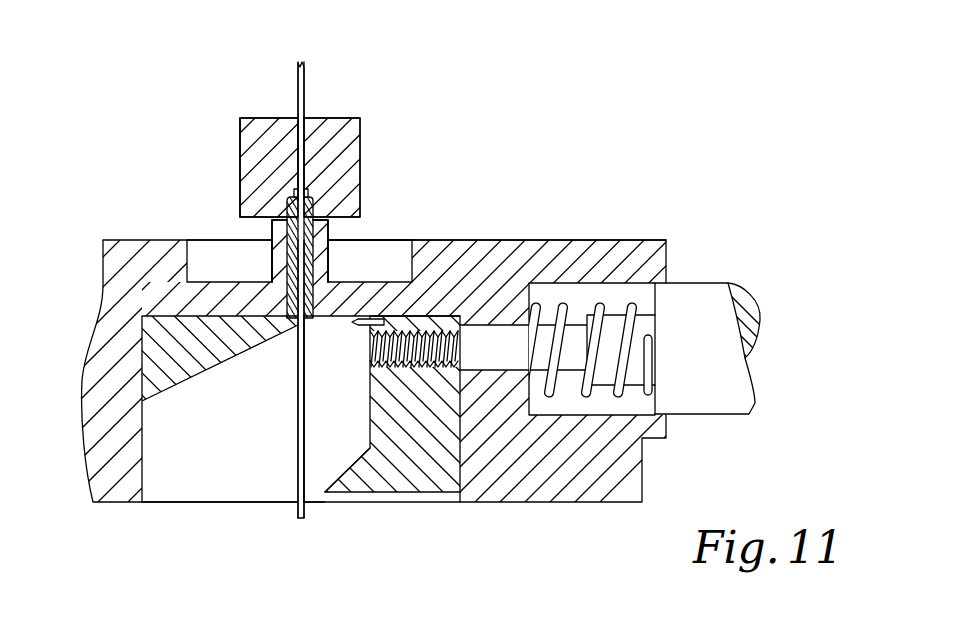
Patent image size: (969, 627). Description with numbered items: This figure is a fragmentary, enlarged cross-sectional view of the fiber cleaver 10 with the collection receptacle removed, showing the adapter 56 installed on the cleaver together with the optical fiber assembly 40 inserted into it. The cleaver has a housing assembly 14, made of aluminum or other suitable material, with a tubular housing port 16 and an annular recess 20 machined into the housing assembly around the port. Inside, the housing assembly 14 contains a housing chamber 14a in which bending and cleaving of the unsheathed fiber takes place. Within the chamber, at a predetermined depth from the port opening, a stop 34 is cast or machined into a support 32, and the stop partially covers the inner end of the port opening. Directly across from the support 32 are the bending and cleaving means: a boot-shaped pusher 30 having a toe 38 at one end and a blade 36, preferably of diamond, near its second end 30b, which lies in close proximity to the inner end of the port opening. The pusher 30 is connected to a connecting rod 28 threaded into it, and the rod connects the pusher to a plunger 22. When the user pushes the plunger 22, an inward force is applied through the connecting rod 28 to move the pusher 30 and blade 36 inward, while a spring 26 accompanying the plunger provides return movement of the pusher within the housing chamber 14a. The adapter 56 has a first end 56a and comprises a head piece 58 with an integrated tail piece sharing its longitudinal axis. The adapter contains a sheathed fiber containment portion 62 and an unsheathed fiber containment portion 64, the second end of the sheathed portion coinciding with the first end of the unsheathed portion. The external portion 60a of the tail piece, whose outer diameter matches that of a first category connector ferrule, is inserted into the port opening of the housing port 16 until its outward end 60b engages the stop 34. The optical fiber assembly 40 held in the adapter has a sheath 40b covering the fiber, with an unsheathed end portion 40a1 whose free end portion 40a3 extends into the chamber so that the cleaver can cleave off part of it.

The fiber cleaver 10 is at (559, 193).
The housing assembly 14 is at (616, 240).
The housing chamber 14a is at (168, 485).
The housing port 16 is at (322, 225).
The annular recess 20 is at (195, 250).
The plunger 22 is at (720, 397).
The spring 26 is at (618, 395).
The connecting rod 28 is at (410, 330).
The pusher 30 is at (425, 465).
The second end of the pusher 30b is at (428, 316).
The support 32 is at (185, 365).
The stop 34 is at (270, 312).
The blade 36 is at (351, 322).
The toe 38 is at (325, 493).
The optical fiber assembly 40 is at (304, 87).
The sheath 40b is at (300, 147).
The unsheathed end portion 40a1 is at (298, 430).
The free end portion 40a3 is at (305, 257).
The adapter 56 is at (402, 93).
The first end of the adapter 56a is at (325, 117).
The head piece 58 is at (240, 128).
The external portion of the tail piece 60a is at (287, 228).
The outward end of the tail piece 60b is at (303, 325).
The sheathed fiber containment portion 62 is at (298, 168).
The unsheathed fiber containment portion 64 is at (270, 243).